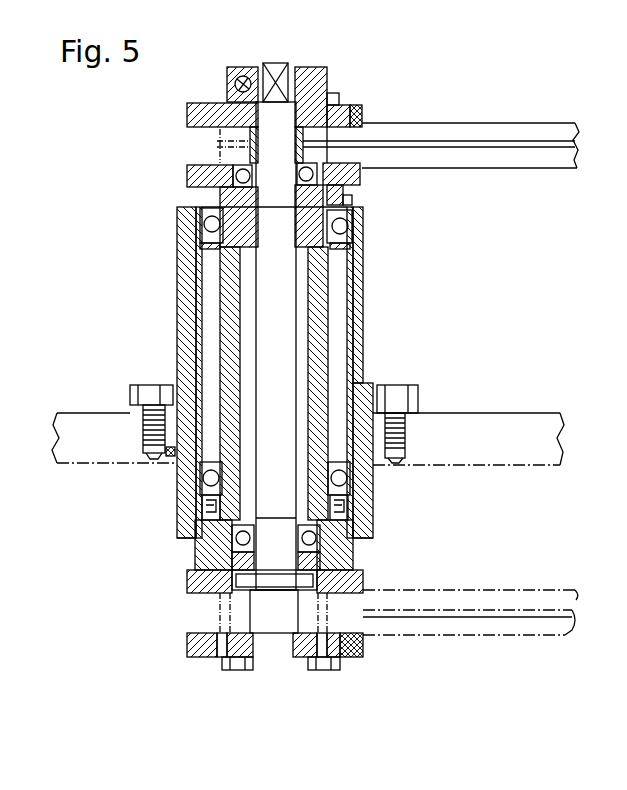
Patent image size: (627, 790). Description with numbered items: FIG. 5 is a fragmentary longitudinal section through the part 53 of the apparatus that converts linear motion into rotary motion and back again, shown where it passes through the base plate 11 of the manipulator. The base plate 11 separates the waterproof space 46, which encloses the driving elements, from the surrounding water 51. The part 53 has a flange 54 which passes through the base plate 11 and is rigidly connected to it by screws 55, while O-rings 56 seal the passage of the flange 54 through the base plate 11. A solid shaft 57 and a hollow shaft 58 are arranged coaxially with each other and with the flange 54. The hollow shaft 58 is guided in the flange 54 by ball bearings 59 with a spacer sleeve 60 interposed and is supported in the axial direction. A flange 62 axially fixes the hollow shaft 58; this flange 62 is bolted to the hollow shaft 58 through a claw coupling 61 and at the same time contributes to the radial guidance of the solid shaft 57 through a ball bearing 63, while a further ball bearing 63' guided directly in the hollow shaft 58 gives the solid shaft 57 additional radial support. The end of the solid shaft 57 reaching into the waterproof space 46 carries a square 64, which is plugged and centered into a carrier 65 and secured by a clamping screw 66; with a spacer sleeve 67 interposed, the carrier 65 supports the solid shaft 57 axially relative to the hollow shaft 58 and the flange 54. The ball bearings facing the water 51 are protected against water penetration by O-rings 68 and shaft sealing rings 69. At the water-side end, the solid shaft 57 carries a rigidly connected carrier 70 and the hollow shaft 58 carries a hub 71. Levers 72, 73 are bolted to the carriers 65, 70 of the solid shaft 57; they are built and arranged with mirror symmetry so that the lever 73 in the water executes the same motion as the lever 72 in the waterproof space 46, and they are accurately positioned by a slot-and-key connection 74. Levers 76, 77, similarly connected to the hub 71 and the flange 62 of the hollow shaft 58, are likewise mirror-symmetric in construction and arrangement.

The base plate 11 is at (512, 430).
The waterproof space 46 is at (397, 296).
The surrounding water 51 is at (462, 531).
The part of the apparatus 53 is at (395, 332).
The flange 54 is at (418, 410).
The screws 55 is at (148, 390).
The O-rings 56 is at (168, 455).
The solid shaft 57 is at (285, 298).
The hollow shaft 58 is at (237, 260).
The ball bearings 59 is at (200, 215).
The spacer sleeve 60 is at (197, 300).
The claw coupling 61 is at (352, 228).
The flange 62 is at (190, 176).
The ball bearing 63 is at (371, 184).
The ball bearing 63' is at (375, 511).
The square 64 is at (283, 66).
The carrier 65 is at (325, 78).
The clamping screw 66 is at (241, 72).
The spacer sleeve 67 is at (250, 143).
The O-rings 68 is at (196, 540).
The shaft sealing rings 69 is at (205, 503).
The carrier 70 is at (212, 645).
The hub 71 is at (363, 573).
The lever 72 is at (459, 130).
The lever 73 is at (520, 626).
The slot-and-key connection 74 is at (357, 107).
The lever 76 is at (489, 597).
The lever 77 is at (517, 162).